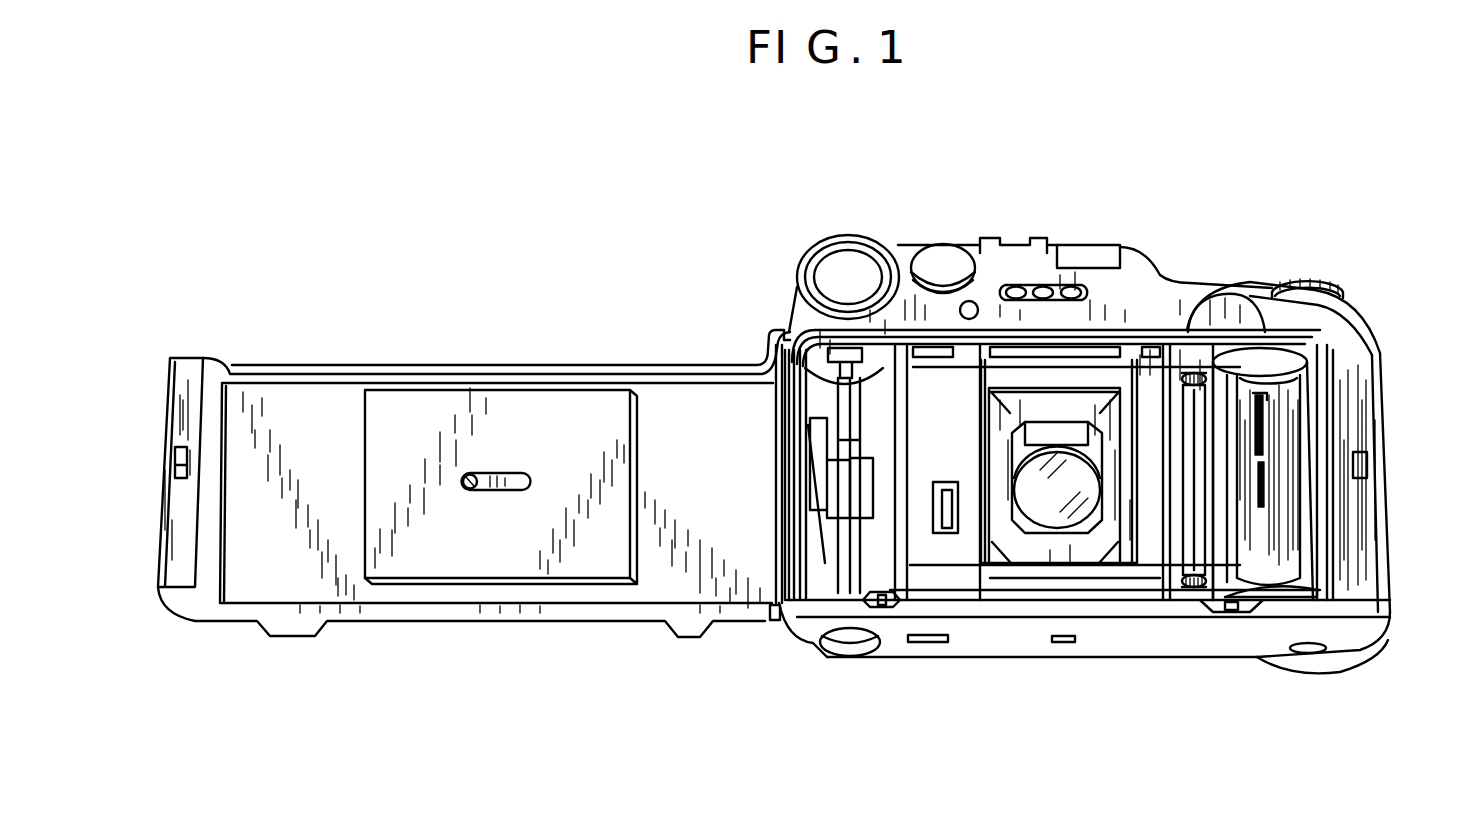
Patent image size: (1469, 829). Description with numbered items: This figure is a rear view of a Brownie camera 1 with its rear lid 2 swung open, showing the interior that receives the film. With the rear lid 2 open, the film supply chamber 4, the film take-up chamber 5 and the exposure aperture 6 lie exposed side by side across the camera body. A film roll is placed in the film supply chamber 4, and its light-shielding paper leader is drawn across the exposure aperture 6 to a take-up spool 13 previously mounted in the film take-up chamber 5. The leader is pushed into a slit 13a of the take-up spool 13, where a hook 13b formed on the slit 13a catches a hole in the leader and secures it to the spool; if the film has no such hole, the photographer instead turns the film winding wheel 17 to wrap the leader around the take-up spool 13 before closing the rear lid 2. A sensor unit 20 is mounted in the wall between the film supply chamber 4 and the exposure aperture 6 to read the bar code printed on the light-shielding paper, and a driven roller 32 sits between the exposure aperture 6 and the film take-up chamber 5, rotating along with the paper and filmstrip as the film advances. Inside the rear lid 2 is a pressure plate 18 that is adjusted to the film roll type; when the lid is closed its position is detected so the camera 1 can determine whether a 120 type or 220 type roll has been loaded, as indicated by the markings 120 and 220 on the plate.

The camera 1 is at (1114, 212).
The rear lid 2 is at (352, 365).
The film supply chamber 4 is at (812, 580).
The film take-up chamber 5 is at (1318, 528).
The exposure aperture 6 is at (1122, 530).
The take-up spool 13 is at (1298, 545).
The slit 13a is at (1263, 417).
The hook 13b is at (1263, 487).
The film winding wheel 17 is at (1307, 279).
The pressure plate 18 is at (613, 478).
The sensor unit 20 is at (953, 533).
The driven roller 32 is at (1190, 530).
The 120 type film roll 120 is at (487, 500).
The 220 type film roll 220 is at (507, 502).